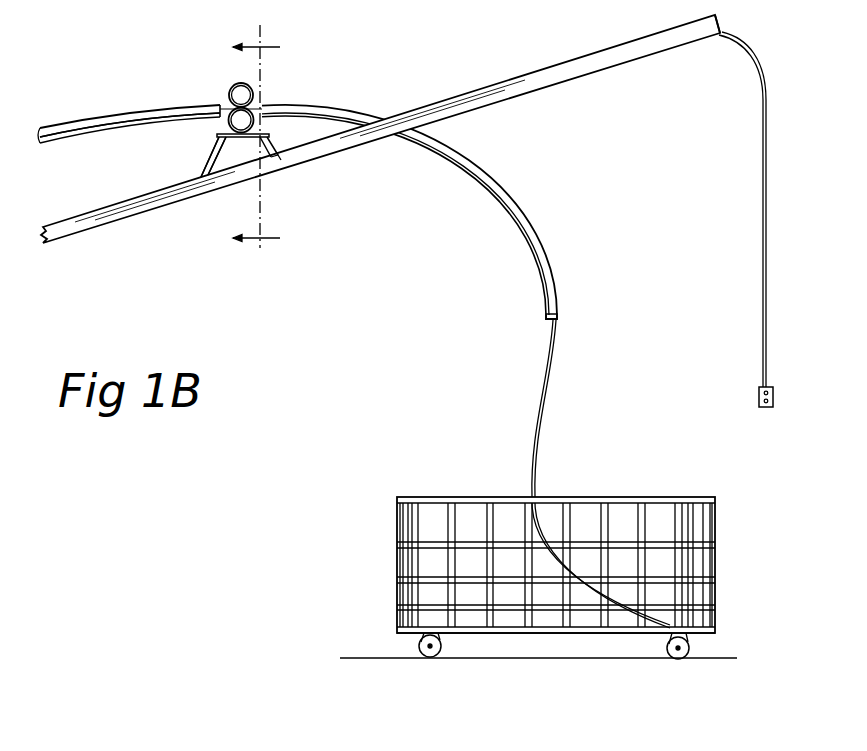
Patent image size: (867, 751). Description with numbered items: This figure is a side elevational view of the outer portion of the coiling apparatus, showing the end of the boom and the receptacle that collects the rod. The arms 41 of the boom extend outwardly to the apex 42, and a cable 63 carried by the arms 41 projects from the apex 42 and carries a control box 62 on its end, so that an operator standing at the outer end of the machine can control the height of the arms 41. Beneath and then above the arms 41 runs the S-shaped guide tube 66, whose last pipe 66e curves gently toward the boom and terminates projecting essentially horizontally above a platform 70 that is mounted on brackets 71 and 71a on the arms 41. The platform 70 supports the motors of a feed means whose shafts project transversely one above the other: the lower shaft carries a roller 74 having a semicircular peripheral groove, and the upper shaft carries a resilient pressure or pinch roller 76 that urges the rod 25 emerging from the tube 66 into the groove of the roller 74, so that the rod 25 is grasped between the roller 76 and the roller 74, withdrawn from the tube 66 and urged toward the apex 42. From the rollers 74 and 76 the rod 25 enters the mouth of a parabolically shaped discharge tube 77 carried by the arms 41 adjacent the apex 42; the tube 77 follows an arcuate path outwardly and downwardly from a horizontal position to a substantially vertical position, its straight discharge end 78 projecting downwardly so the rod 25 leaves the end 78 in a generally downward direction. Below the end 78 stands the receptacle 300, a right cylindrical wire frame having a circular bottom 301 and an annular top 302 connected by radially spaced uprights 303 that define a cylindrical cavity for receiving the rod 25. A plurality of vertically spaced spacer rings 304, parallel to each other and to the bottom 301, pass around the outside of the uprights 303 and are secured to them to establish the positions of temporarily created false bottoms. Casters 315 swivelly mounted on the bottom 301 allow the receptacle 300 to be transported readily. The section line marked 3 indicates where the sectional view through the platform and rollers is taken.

The section line 3- 3 is at (256, 136).
The rod 25 is at (542, 386).
The arms 41 is at (557, 67).
The apex 42 is at (720, 26).
The control box 62 is at (774, 403).
The cable 63 is at (769, 214).
The S-shaped guide tube 66 is at (139, 112).
The pipe 66e is at (78, 131).
The platform 70 is at (214, 138).
The bracket 71 is at (216, 164).
The bracket 71a is at (280, 154).
The roller 74 is at (251, 122).
The resilient pressure roller 76 is at (231, 90).
The discharge tube 77 is at (343, 113).
The discharge end 78 is at (549, 320).
The receptacle 300 is at (553, 571).
The bottom 301 is at (531, 633).
The top 302 is at (630, 503).
The uprights 303 is at (573, 520).
The spacer rings 304 is at (705, 546).
The casters 315 is at (441, 647).